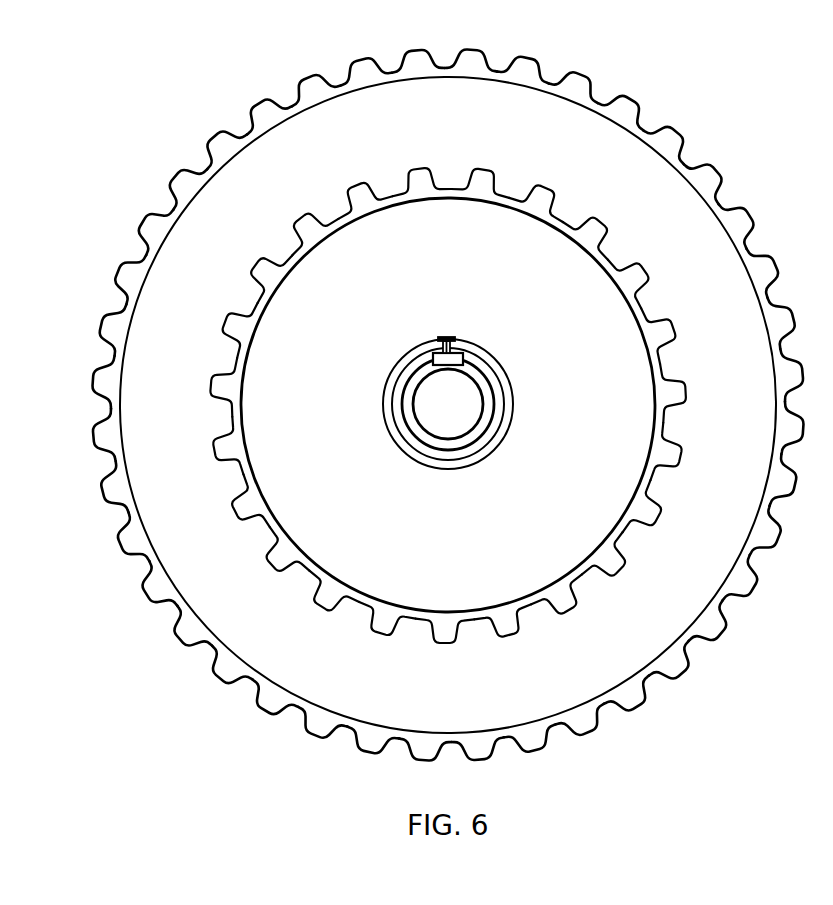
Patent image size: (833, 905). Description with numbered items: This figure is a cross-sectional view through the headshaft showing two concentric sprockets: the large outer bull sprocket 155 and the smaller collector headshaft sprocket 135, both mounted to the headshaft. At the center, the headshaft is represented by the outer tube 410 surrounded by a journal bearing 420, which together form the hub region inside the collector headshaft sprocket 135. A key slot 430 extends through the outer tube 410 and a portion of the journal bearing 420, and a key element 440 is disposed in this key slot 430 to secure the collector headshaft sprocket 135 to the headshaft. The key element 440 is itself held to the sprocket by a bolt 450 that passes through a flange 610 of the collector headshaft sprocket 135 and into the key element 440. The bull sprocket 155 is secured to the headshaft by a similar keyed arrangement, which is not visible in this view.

The bull sprocket 155 is at (559, 142).
The collector headshaft sprocket 135 is at (591, 305).
The flange 610 is at (483, 352).
The journal bearing 420 is at (425, 440).
The outer tube 410 is at (462, 453).
The key slot 430 is at (437, 355).
The key element 440 is at (431, 348).
The bolt 450 is at (447, 336).